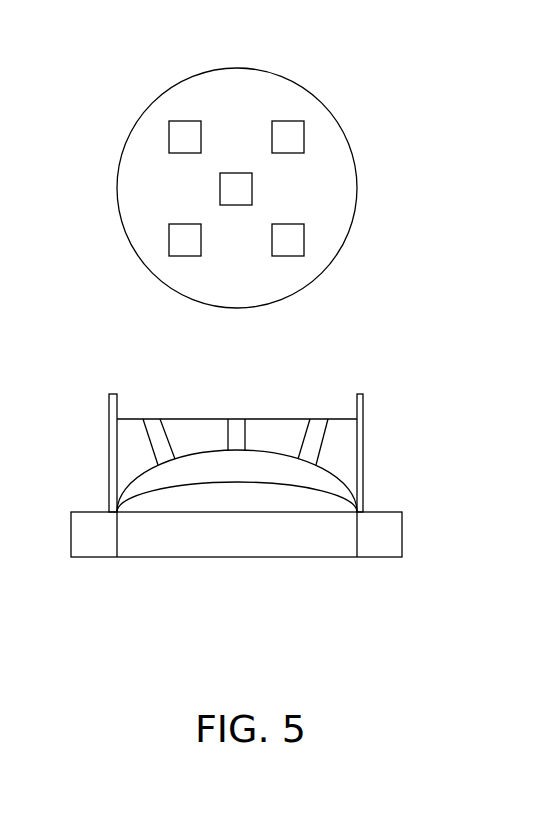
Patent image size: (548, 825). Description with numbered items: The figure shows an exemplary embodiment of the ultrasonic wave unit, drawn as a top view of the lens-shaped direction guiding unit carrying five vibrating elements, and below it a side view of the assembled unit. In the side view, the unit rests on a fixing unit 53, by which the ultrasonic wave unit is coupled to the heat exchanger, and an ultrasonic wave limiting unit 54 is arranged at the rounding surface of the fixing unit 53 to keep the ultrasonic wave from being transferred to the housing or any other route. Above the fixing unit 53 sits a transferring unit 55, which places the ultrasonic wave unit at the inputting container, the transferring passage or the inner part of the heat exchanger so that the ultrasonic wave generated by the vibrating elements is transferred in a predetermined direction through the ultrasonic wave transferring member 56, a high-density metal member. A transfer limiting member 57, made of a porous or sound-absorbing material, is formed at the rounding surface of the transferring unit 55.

The fixing unit 53 is at (242, 557).
The ultrasonic wave limiting unit 54 is at (380, 557).
The transferring unit 55 is at (180, 418).
The ultrasonic wave transferring member 56 is at (157, 427).
The transfer limiting member 57 is at (359, 395).